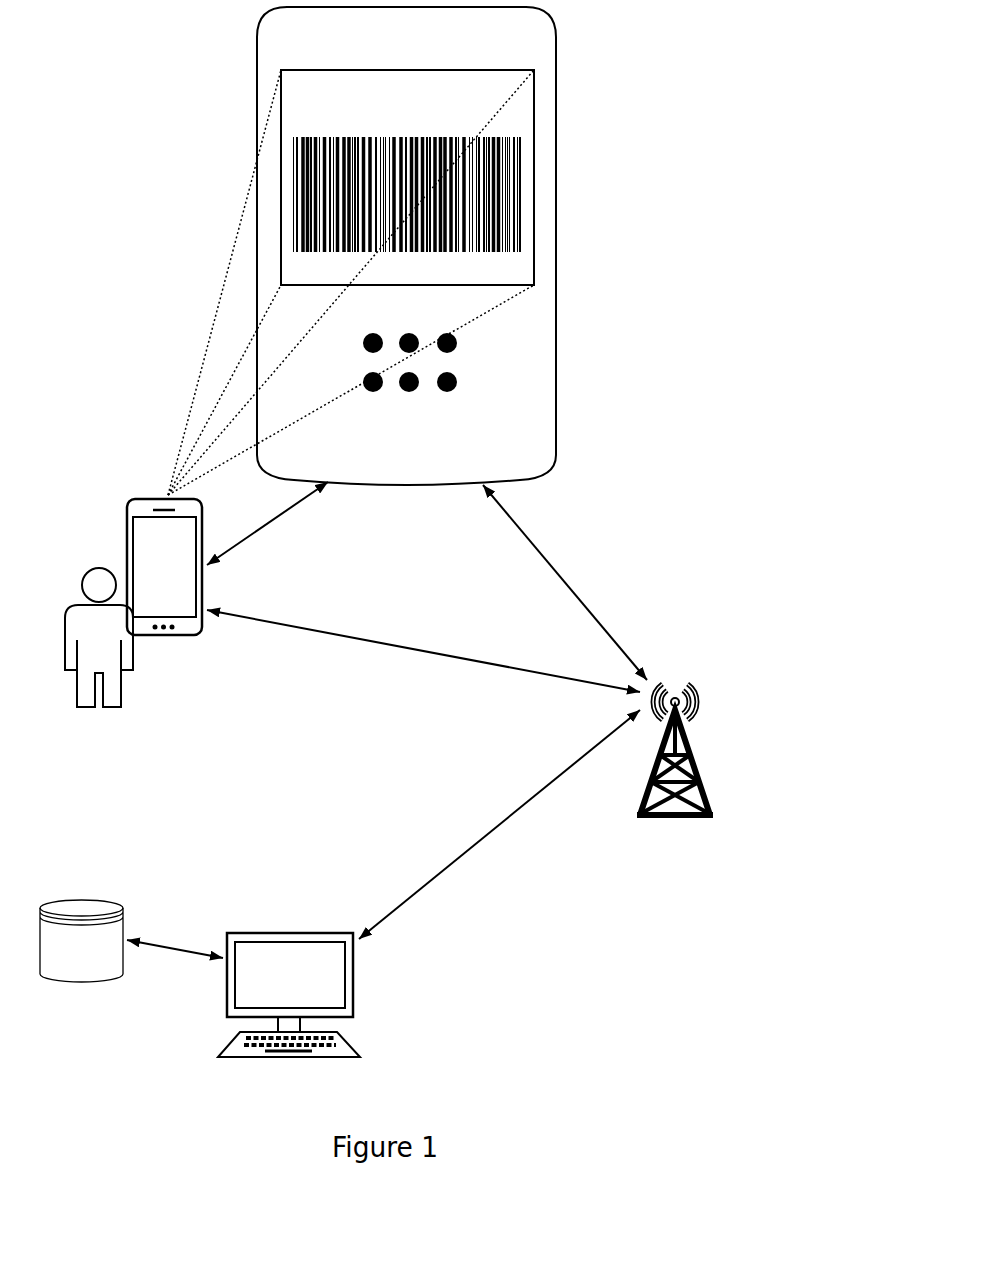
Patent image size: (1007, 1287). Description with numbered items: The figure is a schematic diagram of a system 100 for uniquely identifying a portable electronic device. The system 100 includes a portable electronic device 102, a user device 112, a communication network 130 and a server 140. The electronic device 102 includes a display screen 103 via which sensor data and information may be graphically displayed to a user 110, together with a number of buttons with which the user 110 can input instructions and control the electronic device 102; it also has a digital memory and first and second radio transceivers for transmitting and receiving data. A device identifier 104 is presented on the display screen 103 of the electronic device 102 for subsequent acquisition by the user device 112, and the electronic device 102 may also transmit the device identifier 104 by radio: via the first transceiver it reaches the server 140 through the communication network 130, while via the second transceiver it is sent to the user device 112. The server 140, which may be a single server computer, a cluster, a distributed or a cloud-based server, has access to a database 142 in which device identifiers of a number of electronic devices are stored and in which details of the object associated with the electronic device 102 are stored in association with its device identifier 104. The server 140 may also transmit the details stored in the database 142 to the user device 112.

The system 100 is at (763, 985).
The portable electronic device 102 is at (389, 518).
The display screen 103 is at (383, 283).
The device identifier 104 is at (533, 162).
The user 110 is at (81, 740).
The user device 112 is at (148, 670).
The communication network 130 is at (658, 850).
The server 140 is at (271, 1098).
The database 142 is at (65, 966).